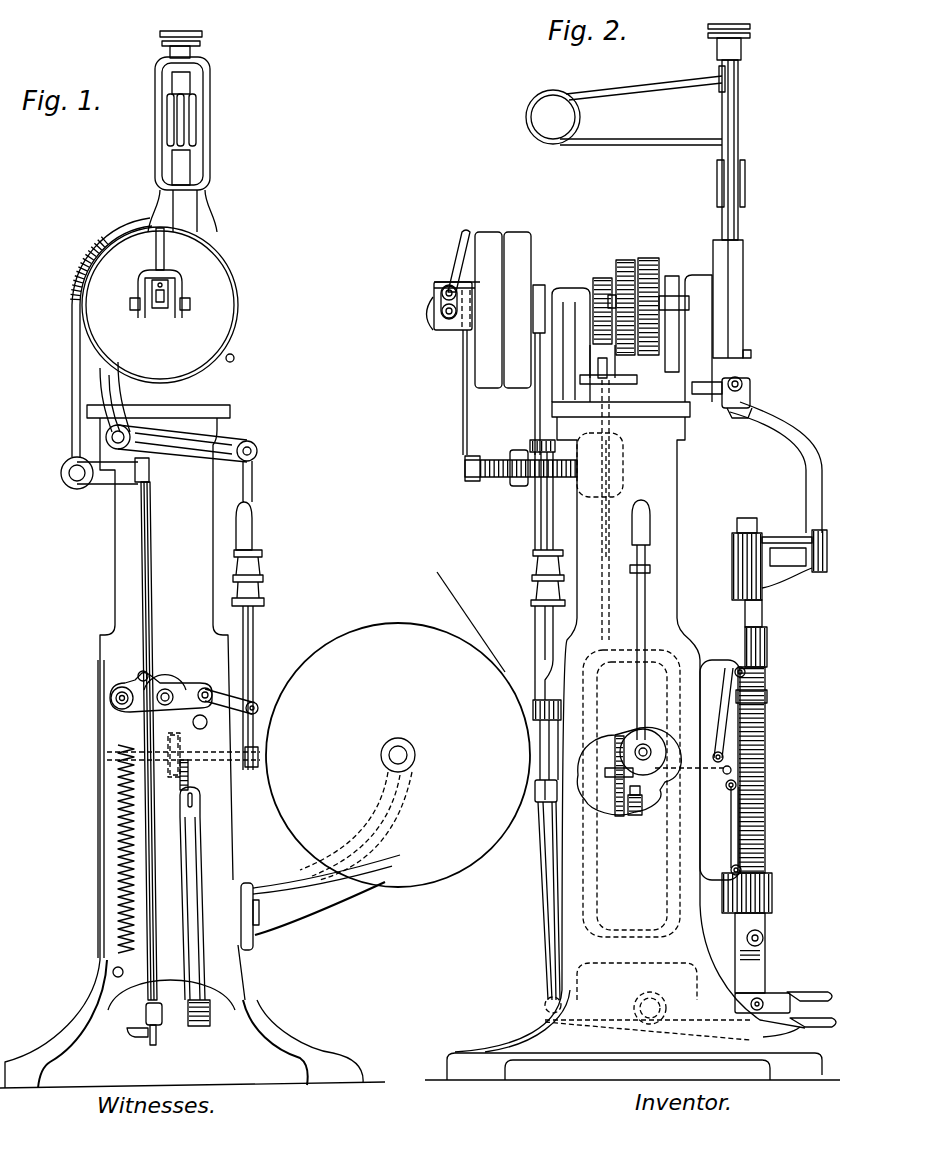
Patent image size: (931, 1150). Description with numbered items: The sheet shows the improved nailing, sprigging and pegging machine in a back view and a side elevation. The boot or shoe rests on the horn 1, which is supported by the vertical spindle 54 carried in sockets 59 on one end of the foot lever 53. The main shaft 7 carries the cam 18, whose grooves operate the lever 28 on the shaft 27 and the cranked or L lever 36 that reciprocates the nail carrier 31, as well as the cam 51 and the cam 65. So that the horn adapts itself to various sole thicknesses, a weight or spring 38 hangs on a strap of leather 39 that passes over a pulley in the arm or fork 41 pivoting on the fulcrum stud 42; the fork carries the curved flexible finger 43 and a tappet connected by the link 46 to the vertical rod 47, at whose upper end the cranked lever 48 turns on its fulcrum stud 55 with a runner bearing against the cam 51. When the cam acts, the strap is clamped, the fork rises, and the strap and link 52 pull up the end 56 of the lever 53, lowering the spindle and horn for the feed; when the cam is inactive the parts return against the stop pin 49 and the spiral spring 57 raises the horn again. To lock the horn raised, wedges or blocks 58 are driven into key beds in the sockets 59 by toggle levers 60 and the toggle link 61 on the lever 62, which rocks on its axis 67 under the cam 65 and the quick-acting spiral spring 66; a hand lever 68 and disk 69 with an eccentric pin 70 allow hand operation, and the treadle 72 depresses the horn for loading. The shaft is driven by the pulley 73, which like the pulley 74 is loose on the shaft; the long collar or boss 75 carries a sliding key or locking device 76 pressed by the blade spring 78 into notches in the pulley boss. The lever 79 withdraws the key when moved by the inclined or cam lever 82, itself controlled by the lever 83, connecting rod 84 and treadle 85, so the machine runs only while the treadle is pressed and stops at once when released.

In FIG. 2, the horn 1 is at (782, 432).
In FIG. 2, the main shaft 7 is at (614, 292).
In FIG. 2, the cam 18 is at (646, 262).
In FIG. 2, the shaft 27 is at (750, 356).
In FIG. 2, the lever 28 is at (662, 296).
In FIG. 2, the nail carrier 31 is at (746, 394).
In FIG. 2, the cranked or L lever 36 is at (646, 362).
In FIG. 1, the weight or spring 38 is at (116, 896).
In FIG. 1, the strap of leather 39 is at (190, 776).
In FIG. 2, the strap of leather 39 is at (545, 750).
In FIG. 1, the arm or fork 41 is at (115, 710).
In FIG. 1, the fulcrum stud 42 is at (111, 698).
In FIG. 1, the curved flexible finger 43 is at (150, 678).
In FIG. 1, the link 46 is at (258, 710).
In FIG. 1, the vertical rod 47 is at (256, 638).
In FIG. 2, the vertical rod 47 is at (543, 541).
In FIG. 1, the cranked lever 48 is at (100, 393).
In FIG. 2, the cranked lever 48 is at (535, 402).
In FIG. 1, the stop pin 49 is at (203, 729).
In FIG. 2, the cam 51 is at (538, 286).
In FIG. 1, the link 52 is at (203, 892).
In FIG. 2, the link 52 is at (553, 881).
In FIG. 1, the foot lever 53 is at (201, 1024).
In FIG. 2, the foot lever 53 is at (606, 564).
In FIG. 2, the vertical spindle 54 is at (733, 769).
In FIG. 1, the fulcrum stud 55 is at (125, 447).
In FIG. 2, the end of lever 56 is at (546, 1001).
In FIG. 2, the spiral spring 57 is at (766, 718).
In FIG. 2, the wedges or blocks 58 is at (746, 673).
In FIG. 2, the sockets 59 is at (752, 637).
In FIG. 2, the toggle levers 60 is at (728, 705).
In FIG. 2, the toggle link 61 is at (725, 757).
In FIG. 2, the lever 62 is at (642, 792).
In FIG. 2, the cam 65 is at (603, 280).
In FIG. 2, the spiral spring 66 is at (641, 810).
In FIG. 2, the axis 67 is at (728, 791).
In FIG. 1, the hand lever 68 is at (262, 515).
In FIG. 2, the hand lever 68 is at (647, 522).
In FIG. 1, the disk 69 is at (168, 740).
In FIG. 2, the disk 69 is at (612, 776).
In FIG. 2, the eccentric pin 70 is at (652, 736).
In FIG. 2, the treadle 72 is at (812, 992).
In FIG. 1, the pulley 73 is at (160, 305).
In FIG. 2, the pulley 73 is at (486, 232).
In FIG. 2, the pulley 74 is at (515, 232).
In FIG. 2, the long collar or boss 75 is at (446, 326).
In FIG. 1, the sliding key or locking device 76 is at (183, 290).
In FIG. 2, the sliding key or locking device 76 is at (438, 287).
In FIG. 1, the blade spring 78 is at (158, 308).
In FIG. 2, the blade spring 78 is at (434, 303).
In FIG. 1, the lever 79 is at (164, 246).
In FIG. 2, the lever 79 is at (460, 246).
In FIG. 1, the inclined or cam lever 82 is at (112, 250).
In FIG. 2, the inclined or cam lever 82 is at (469, 232).
In FIG. 1, the lever 83 is at (115, 473).
In FIG. 2, the lever 83 is at (528, 472).
In FIG. 1, the connecting rod 84 is at (151, 590).
In FIG. 2, the connecting rod 84 is at (535, 627).
In FIG. 1, the treadle 85 is at (140, 1037).
In FIG. 2, the treadle 85 is at (826, 1027).